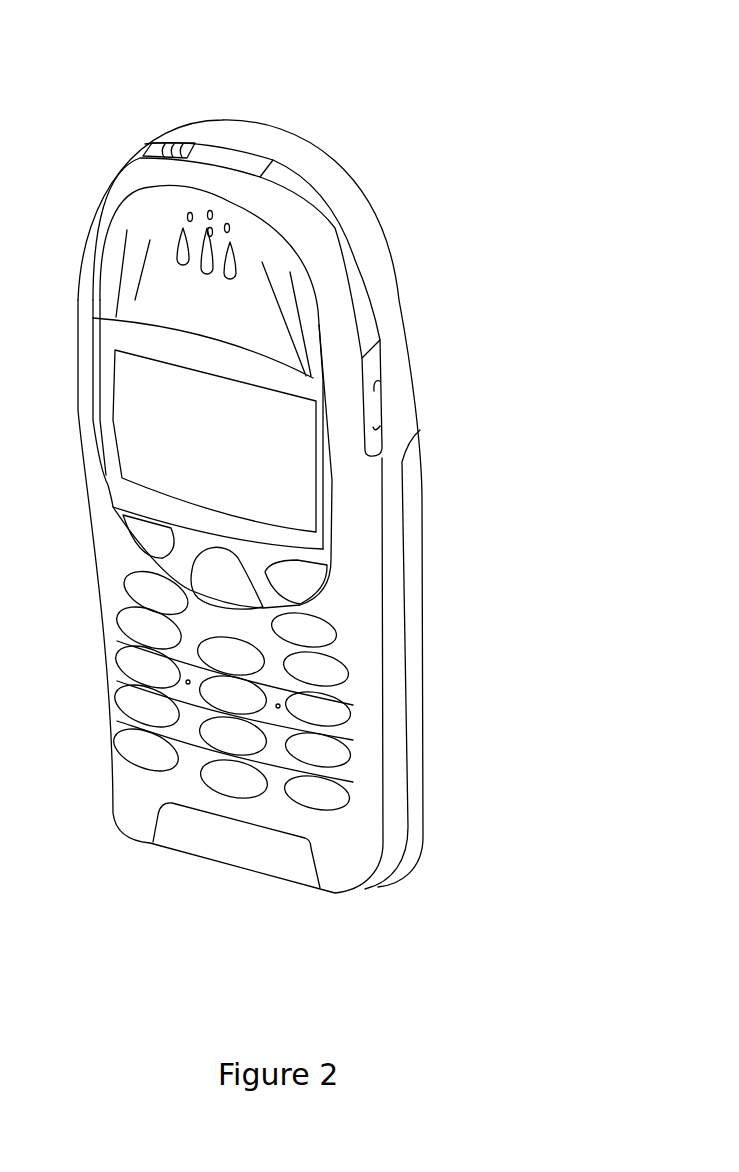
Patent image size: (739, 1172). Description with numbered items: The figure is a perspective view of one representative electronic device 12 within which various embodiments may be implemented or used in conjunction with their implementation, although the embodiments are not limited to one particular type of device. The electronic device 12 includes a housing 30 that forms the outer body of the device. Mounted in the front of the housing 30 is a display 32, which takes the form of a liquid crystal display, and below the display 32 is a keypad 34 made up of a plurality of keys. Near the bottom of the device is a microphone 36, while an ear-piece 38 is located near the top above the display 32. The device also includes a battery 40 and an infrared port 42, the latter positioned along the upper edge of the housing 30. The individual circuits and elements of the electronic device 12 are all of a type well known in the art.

The electronic device 12 is at (357, 126).
The housing 30 is at (392, 277).
The display 32 is at (290, 480).
The keypad 34 is at (318, 798).
The microphone 36 is at (178, 838).
The ear-piece 38 is at (200, 240).
The battery 40 is at (423, 783).
The infrared port 42 is at (231, 157).